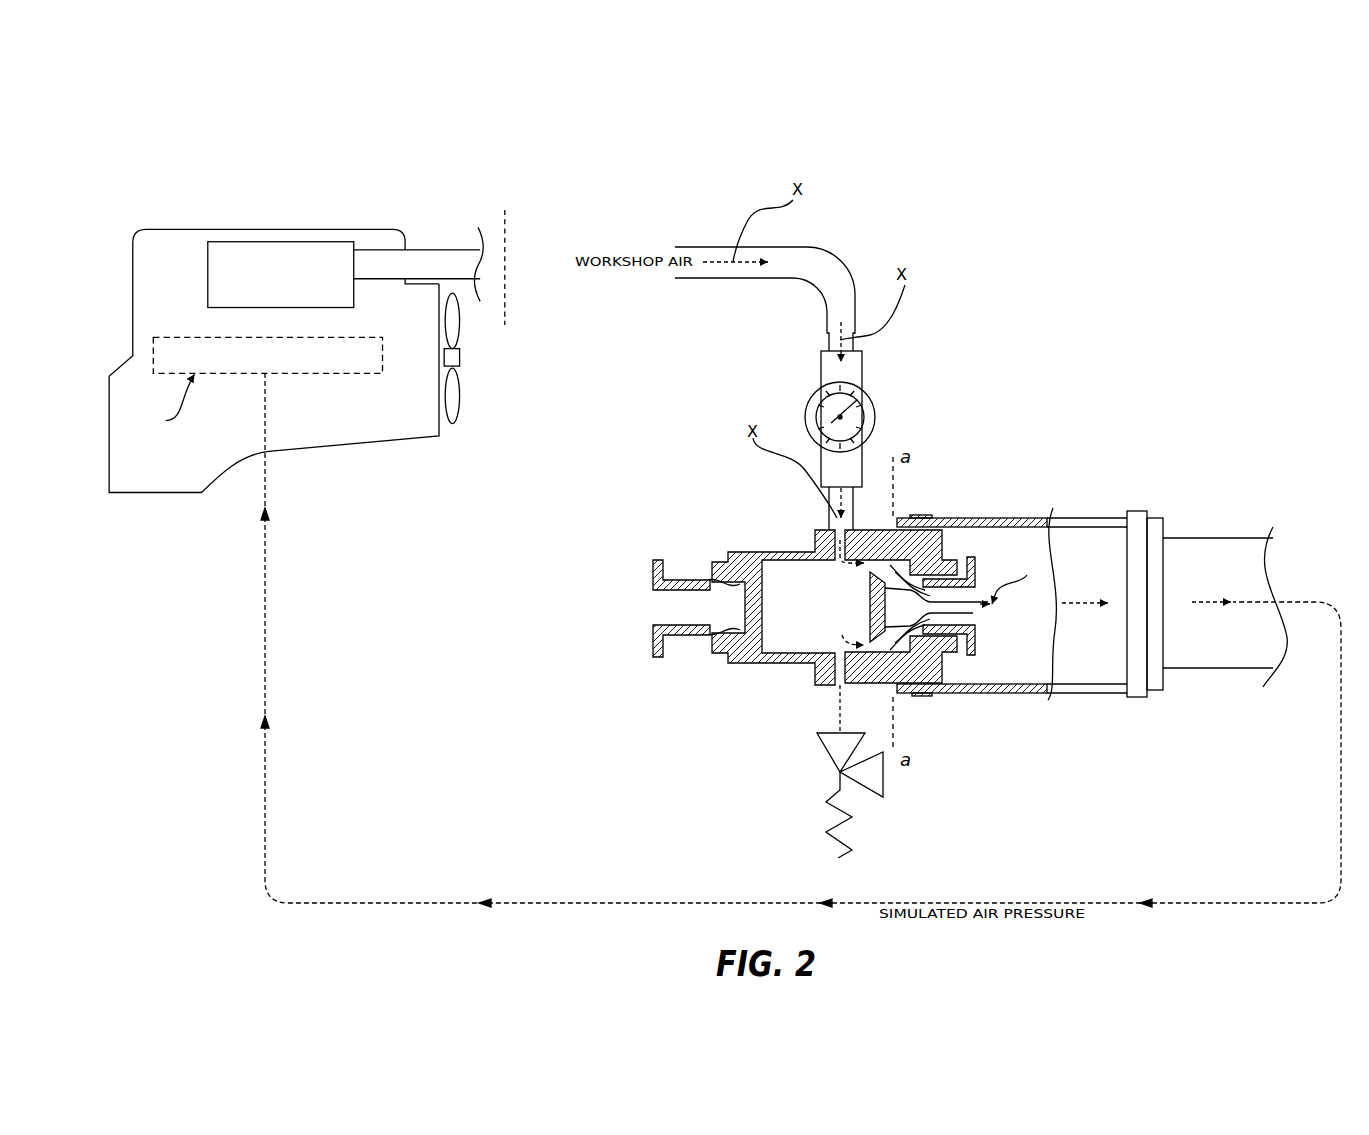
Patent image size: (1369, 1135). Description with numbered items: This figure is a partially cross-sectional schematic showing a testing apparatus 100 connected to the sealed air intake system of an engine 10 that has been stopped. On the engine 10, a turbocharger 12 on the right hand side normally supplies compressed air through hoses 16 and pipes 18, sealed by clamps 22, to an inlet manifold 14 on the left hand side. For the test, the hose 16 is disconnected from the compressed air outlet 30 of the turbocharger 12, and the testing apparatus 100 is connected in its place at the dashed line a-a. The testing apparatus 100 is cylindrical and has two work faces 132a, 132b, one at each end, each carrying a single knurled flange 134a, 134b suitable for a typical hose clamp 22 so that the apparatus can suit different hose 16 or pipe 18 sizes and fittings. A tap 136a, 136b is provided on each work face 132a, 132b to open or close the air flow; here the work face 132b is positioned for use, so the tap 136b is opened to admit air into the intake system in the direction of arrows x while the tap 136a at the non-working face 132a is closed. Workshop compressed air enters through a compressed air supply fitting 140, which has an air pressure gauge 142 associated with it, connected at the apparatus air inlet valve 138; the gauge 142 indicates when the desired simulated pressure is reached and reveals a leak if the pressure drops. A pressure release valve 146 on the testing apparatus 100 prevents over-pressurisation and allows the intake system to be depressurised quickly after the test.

The engine 10 is at (125, 221).
The turbocharger 12 is at (210, 253).
The inlet manifold 14 is at (222, 357).
The hose 16 is at (1077, 463).
The pipe 18 is at (1217, 538).
The clamp 22 is at (923, 518).
The compressed air outlet 30 is at (445, 258).
The testing apparatus 100 is at (819, 623).
The first work face 132a is at (624, 520).
The second work face 132b is at (952, 668).
The first flange 134a is at (722, 551).
The second flange 134b is at (878, 517).
The first tap 136a is at (683, 652).
The second tap 136b is at (977, 642).
The air inlet valve 138 is at (825, 506).
The compressed air supply fitting 140 is at (839, 420).
The air pressure gauge 142 is at (875, 415).
The pressure release valve 146 is at (819, 808).